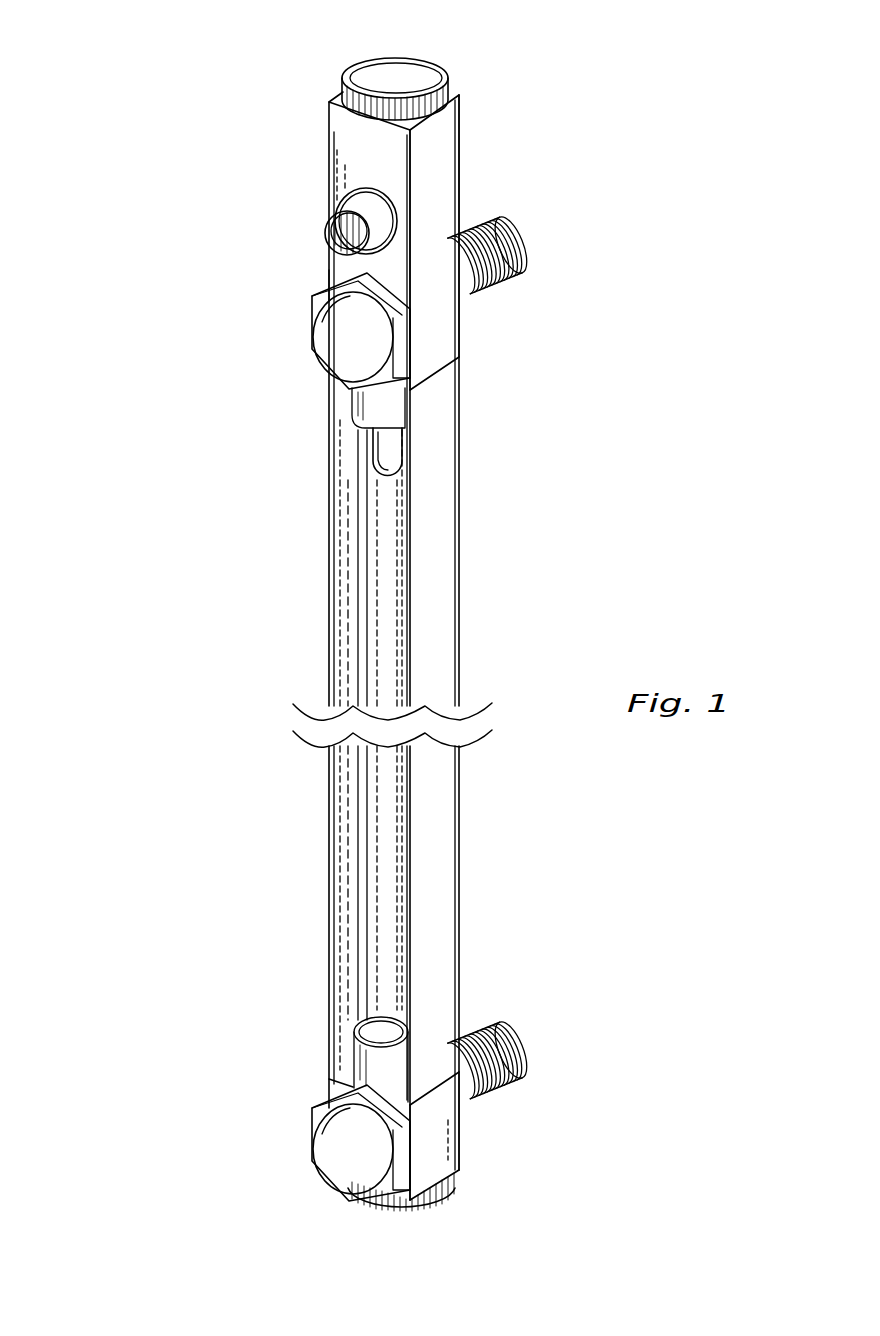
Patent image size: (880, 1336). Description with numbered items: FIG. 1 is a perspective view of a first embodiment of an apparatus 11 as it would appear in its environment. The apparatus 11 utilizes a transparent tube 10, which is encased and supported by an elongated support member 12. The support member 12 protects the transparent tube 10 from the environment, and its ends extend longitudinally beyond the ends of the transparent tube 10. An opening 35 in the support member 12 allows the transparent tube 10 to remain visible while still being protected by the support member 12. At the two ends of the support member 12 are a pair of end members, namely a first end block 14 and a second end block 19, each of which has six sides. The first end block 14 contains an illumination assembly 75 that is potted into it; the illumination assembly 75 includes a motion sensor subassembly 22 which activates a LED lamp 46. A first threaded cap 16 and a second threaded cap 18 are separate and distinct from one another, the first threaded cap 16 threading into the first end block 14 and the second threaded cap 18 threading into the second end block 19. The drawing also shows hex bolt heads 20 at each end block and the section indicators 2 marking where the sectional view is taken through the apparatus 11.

The section line 2- 2 is at (395, 72).
The transparent tube 10 is at (378, 580).
The apparatus 11 is at (110, 388).
The support member 12 is at (428, 563).
The first end block 14 is at (445, 175).
The first threaded cap 16 is at (423, 78).
The second threaded cap 18 is at (433, 1200).
The second end block 19 is at (440, 1130).
The hex bolt head 20 is at (333, 343).
The motion sensor subassembly 22 is at (326, 210).
The opening 35 is at (346, 858).
The LED lamp 46 is at (385, 447).
The illumination assembly 75 is at (316, 267).